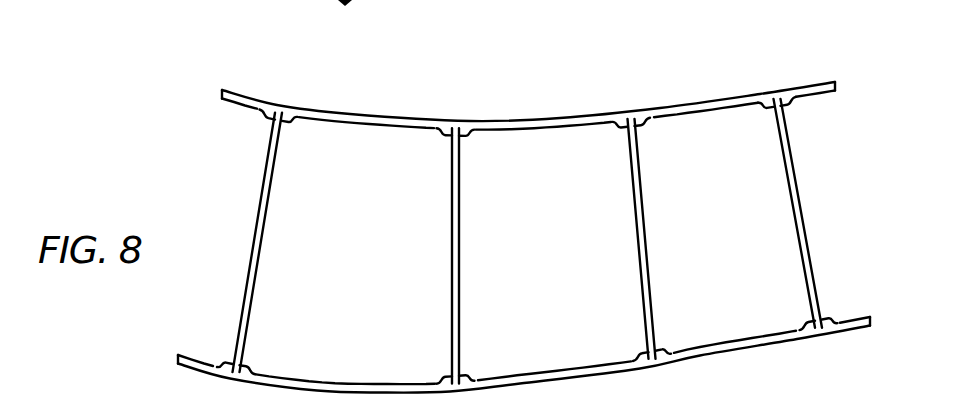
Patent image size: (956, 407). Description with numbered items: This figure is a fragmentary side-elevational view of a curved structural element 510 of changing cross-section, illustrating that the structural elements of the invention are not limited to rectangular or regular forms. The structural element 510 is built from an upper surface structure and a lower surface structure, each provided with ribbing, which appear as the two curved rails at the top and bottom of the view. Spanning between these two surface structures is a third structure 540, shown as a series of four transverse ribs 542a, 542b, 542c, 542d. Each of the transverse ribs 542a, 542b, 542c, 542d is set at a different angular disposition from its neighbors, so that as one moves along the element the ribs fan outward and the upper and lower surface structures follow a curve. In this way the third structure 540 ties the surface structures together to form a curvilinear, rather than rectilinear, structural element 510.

The structural element 510 is at (225, 162).
The third structure 540 is at (497, 153).
The transverse rib 542a is at (260, 254).
The transverse rib 542b is at (460, 268).
The transverse rib 542c is at (648, 252).
The transverse rib 542d is at (797, 187).